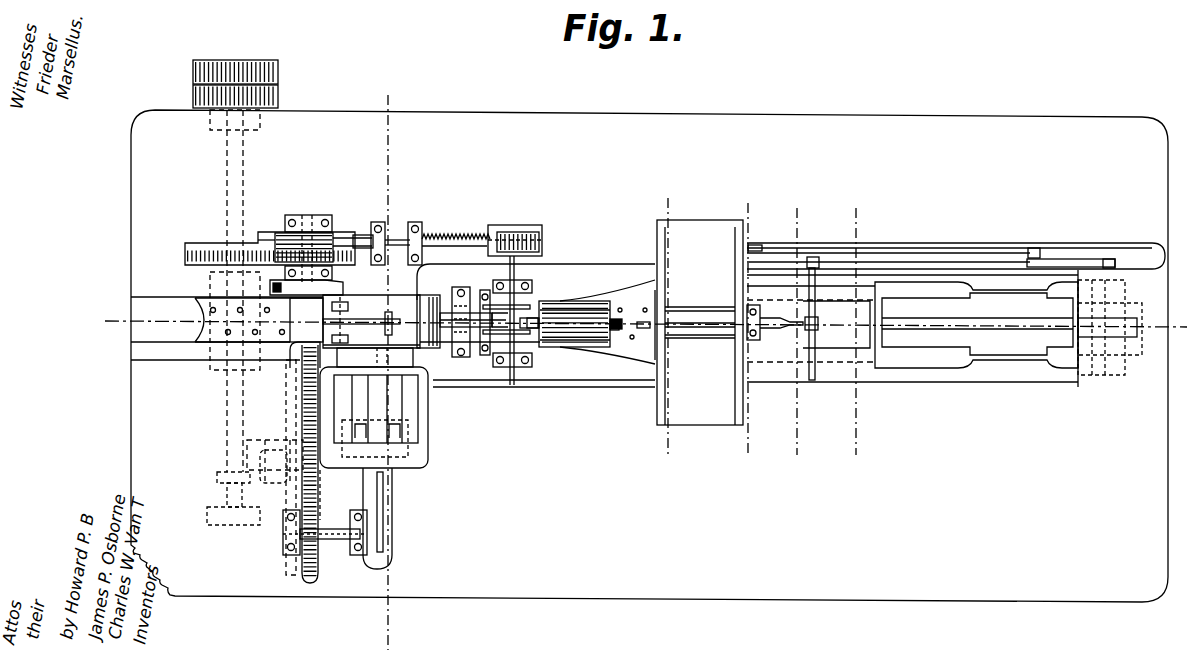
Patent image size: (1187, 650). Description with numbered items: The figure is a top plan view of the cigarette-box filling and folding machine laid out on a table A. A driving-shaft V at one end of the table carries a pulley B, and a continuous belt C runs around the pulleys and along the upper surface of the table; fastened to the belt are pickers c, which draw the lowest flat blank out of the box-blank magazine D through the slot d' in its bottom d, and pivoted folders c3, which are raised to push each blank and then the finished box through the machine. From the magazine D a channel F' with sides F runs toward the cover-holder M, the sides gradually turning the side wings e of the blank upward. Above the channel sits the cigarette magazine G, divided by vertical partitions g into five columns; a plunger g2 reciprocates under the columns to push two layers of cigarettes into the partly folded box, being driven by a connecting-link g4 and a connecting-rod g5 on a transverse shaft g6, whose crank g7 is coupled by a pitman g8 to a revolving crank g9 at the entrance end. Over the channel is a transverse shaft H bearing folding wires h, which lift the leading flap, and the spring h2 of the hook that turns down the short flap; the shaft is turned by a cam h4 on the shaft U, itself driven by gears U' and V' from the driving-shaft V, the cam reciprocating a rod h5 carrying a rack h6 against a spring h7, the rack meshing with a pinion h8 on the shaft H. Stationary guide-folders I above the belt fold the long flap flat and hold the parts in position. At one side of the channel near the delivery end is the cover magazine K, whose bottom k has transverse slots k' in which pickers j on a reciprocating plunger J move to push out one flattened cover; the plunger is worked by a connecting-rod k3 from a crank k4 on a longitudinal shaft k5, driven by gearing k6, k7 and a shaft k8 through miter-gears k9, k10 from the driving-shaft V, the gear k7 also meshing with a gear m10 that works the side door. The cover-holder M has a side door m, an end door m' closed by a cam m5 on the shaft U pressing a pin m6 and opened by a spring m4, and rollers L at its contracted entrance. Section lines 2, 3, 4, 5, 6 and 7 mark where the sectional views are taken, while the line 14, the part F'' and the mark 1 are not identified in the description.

The table A is at (649, 356).
The pulley B is at (268, 289).
The belt C is at (212, 333).
The magazine D is at (912, 328).
The bottom d is at (983, 306).
The medial longitudinal slot d' is at (1009, 327).
The sides F is at (573, 313).
The channel F' is at (669, 322).
The roller arm F'' is at (721, 297).
The side wings e is at (608, 304).
The pickers c is at (634, 323).
The folders c3 is at (618, 329).
The magazine G is at (700, 322).
The vertical partitions g is at (686, 307).
The plunger g2 is at (782, 328).
The connecting-link g4 is at (782, 320).
The connecting-rod g5 is at (810, 330).
The transverse shaft g6 is at (818, 281).
The crank g7 is at (775, 262).
The pitman g8 is at (888, 245).
The revolving crank g9 is at (1058, 259).
The transverse shaft H is at (511, 367).
The folder rods h is at (505, 308).
The spring h2 is at (530, 329).
The cam h4 is at (335, 240).
The rod h5 is at (398, 240).
The rack h6 is at (543, 240).
The spring h7 is at (448, 236).
The pinion h8 is at (514, 256).
The guide-folders I is at (470, 305).
The plunger J is at (365, 443).
The pickers j is at (398, 432).
The magazine K is at (374, 417).
The bottom k is at (377, 385).
The transverse slots k' is at (378, 401).
The connecting-rod k3 is at (384, 503).
The crank k4 is at (366, 556).
The shaft k5 is at (333, 539).
The gearing k6 is at (303, 567).
The gear k7 is at (302, 428).
The shaft k8 is at (305, 505).
The miter-gear k9 is at (222, 482).
The miter-gear k10 is at (258, 480).
The rollers L is at (428, 295).
The cover-holder M is at (371, 321).
The door m is at (375, 357).
The hinged door m' is at (361, 311).
The spring m4 is at (375, 320).
The cam m5 is at (276, 283).
The pin m6 is at (340, 288).
The gear m10 is at (302, 388).
The shaft U is at (304, 229).
The gear U' is at (265, 218).
The driving-shaft V is at (229, 266).
The gear V' is at (266, 236).
The section line 1 is at (1115, 330).
The section line 2 is at (636, 323).
The section points 3 is at (745, 322).
The section line 4 is at (855, 328).
The section line 5 is at (796, 328).
The section line 6 is at (748, 325).
The section line 7 is at (666, 326).
The section line 14 is at (391, 361).